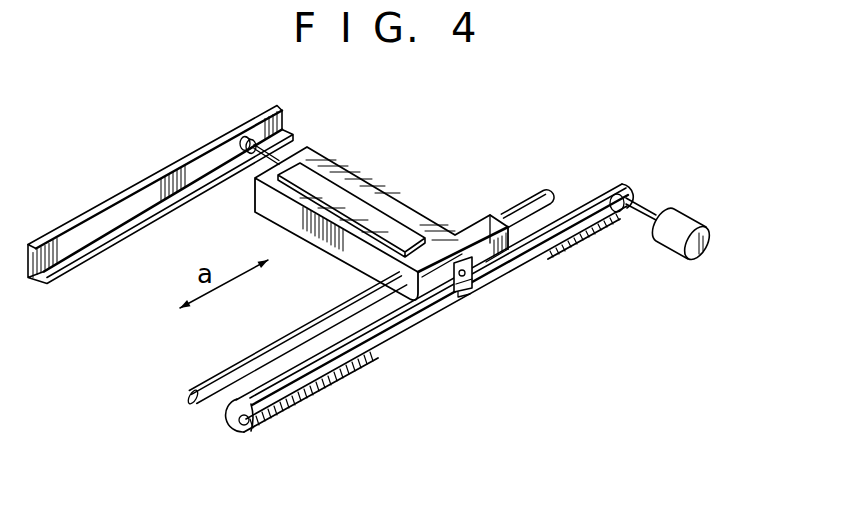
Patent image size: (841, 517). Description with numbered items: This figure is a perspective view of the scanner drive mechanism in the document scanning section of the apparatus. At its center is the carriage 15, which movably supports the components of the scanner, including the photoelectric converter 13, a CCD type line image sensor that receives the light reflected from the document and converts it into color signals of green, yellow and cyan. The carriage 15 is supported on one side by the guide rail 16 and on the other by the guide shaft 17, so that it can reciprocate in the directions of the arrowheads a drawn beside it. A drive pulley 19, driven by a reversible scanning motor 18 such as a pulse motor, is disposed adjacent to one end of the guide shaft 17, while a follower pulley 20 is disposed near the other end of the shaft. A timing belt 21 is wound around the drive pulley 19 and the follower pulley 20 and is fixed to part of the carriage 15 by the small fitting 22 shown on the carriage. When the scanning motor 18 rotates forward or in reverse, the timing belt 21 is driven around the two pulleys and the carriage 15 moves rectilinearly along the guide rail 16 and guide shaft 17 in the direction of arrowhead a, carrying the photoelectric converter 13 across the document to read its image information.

The photoelectric converter 13 is at (345, 196).
The carriage 15 is at (420, 217).
The guide rail 16 is at (212, 145).
The guide shaft 17 is at (527, 205).
The scanning motor 18 is at (662, 245).
The drive pulley 19 is at (633, 196).
The follower pulley 20 is at (250, 432).
The timing belt 21 is at (388, 342).
The bracket 22 is at (472, 286).